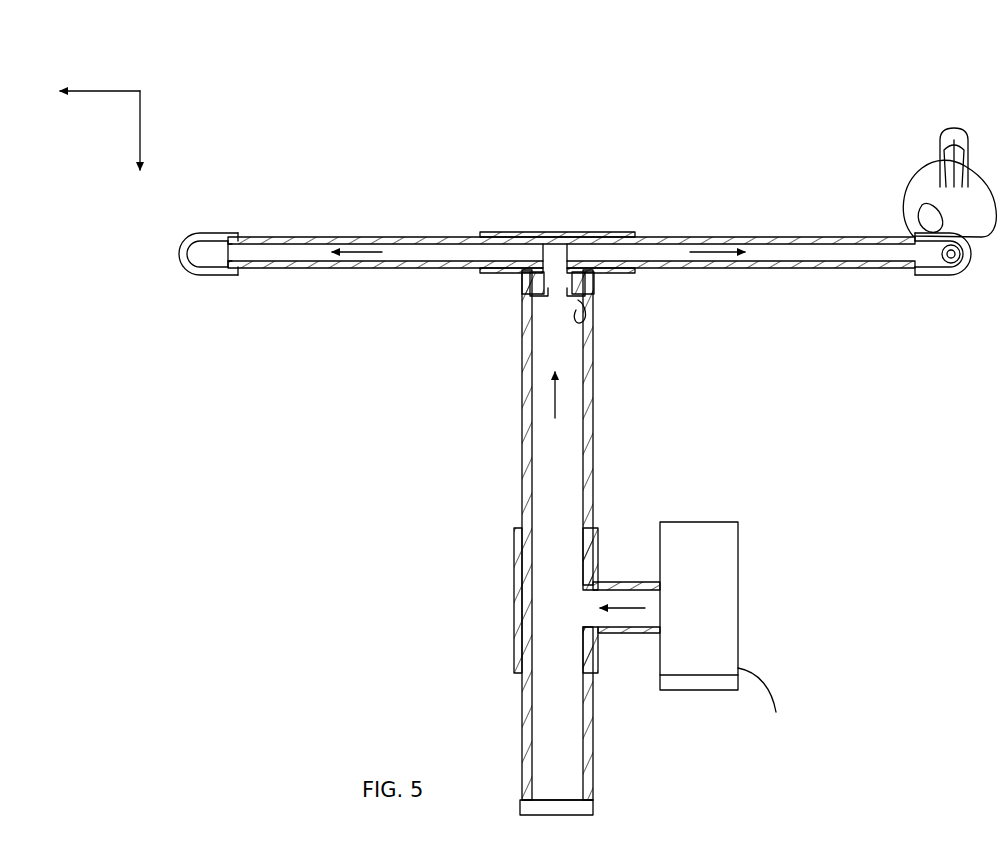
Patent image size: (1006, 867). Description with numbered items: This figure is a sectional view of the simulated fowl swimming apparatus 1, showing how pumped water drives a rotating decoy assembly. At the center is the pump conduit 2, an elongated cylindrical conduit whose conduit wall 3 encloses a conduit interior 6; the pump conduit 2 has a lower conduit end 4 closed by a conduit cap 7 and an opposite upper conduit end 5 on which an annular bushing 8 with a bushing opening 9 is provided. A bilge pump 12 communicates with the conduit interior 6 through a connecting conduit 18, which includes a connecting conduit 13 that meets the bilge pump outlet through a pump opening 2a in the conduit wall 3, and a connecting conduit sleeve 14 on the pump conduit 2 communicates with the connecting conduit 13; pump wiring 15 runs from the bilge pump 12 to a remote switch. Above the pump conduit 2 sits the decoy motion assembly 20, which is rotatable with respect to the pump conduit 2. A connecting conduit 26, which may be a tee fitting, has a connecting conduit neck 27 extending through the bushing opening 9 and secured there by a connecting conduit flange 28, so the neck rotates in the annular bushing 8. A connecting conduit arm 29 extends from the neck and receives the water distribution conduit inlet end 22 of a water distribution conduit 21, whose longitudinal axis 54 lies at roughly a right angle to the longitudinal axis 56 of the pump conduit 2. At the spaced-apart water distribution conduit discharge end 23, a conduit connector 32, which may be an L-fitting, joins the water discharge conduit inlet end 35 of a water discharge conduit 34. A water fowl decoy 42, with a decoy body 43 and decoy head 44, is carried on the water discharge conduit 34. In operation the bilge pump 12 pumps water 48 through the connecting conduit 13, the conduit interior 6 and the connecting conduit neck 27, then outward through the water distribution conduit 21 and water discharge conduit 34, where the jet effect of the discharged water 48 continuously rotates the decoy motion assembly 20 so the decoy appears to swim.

The simulated fowl swimming apparatus 1 is at (374, 105).
The pump conduit 2 is at (536, 542).
The pump opening 2a is at (604, 633).
The conduit wall 3 is at (521, 478).
The lower conduit end 4 is at (594, 812).
The upper conduit end 5 is at (596, 288).
The conduit interior 6 is at (532, 502).
The conduit cap 7 is at (520, 805).
The annular bushing 8 is at (530, 290).
The bushing opening 9 is at (536, 280).
The bilge pump 12 is at (720, 568).
The connecting conduit 13 is at (632, 580).
The connecting conduit sleeve 14 is at (515, 565).
The pump wiring 15 is at (778, 685).
The connecting conduit 18 is at (514, 600).
The decoy motion assembly 20 is at (571, 263).
The water distribution conduit 21 is at (384, 272).
The water distribution conduit inlet end 22 is at (566, 237).
The water distribution conduit discharge end 23 is at (216, 272).
The connecting conduit 26 is at (504, 232).
The connecting conduit neck 27 is at (600, 280).
The connecting conduit flange 28 is at (586, 332).
The connecting conduit arm 29 is at (482, 236).
The conduit connector 32 is at (232, 270).
The water discharge conduit 34 is at (928, 235).
The water discharge conduit inlet end 35 is at (948, 264).
The water fowl decoy 42 is at (917, 161).
The decoy body 43 is at (925, 188).
The decoy head 44 is at (944, 133).
The water 48 is at (380, 250).
The longitudinal axis 54 is at (100, 91).
The longitudinal axis 56 is at (140, 133).